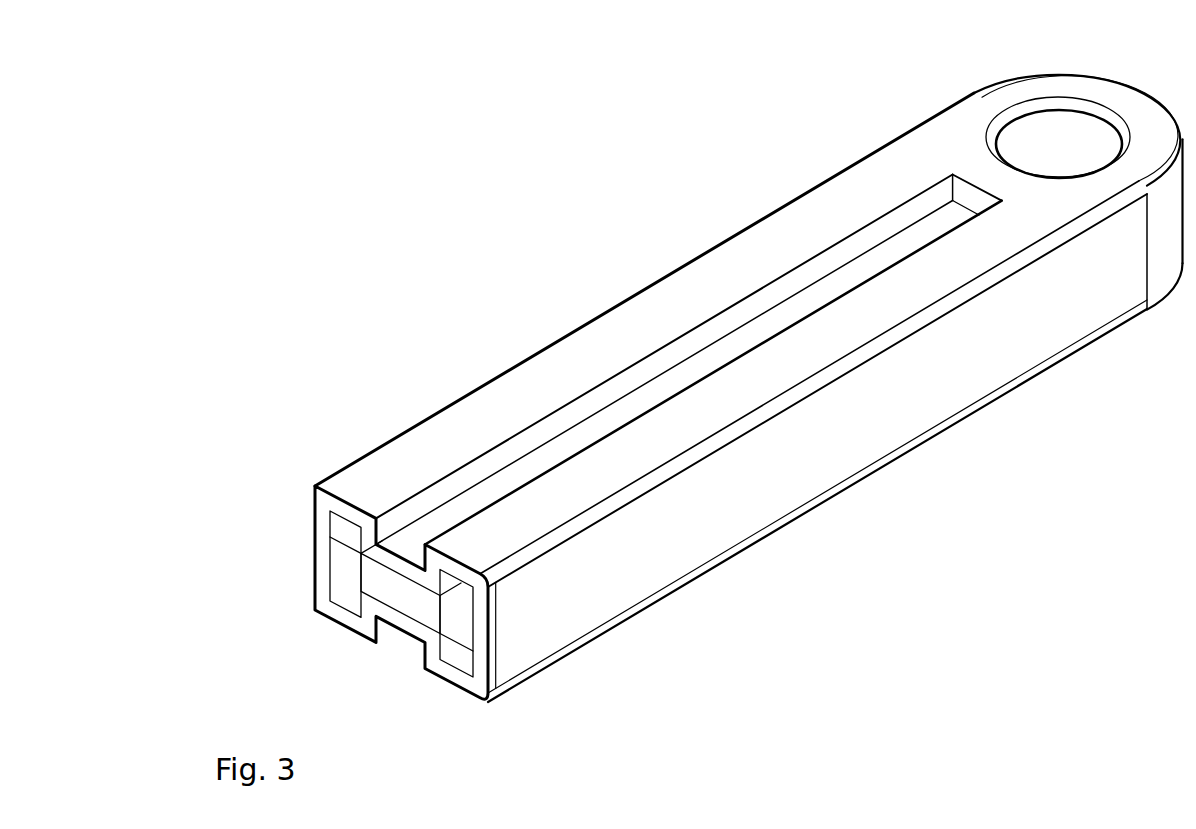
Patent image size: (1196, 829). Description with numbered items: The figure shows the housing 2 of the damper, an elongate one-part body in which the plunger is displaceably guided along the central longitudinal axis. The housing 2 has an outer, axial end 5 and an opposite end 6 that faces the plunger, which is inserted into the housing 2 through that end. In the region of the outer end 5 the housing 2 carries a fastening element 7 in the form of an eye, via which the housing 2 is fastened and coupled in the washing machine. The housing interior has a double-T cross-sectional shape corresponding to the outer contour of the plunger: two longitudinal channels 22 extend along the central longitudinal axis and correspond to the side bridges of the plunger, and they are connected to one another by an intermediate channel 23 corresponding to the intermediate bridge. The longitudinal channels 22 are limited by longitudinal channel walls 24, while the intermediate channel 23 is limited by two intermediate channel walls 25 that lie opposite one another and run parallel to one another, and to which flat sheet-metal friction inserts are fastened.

The housing 2 is at (668, 270).
The outer, axial end 5 is at (996, 82).
The opposite end 6 is at (475, 685).
The fastening element 7 is at (1013, 142).
The longitudinal channels 22 is at (352, 540).
The intermediate channel 23 is at (343, 614).
The longitudinal channel walls 24 is at (343, 563).
The intermediate channel walls 25 is at (462, 607).